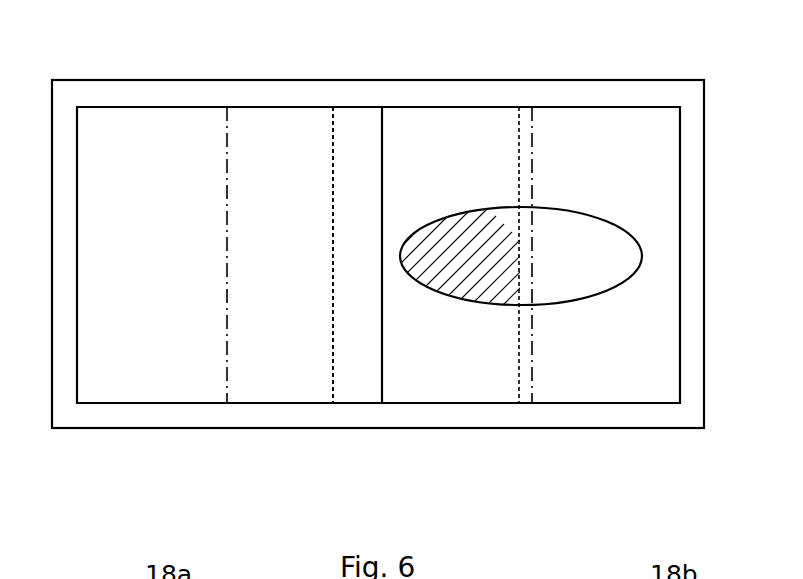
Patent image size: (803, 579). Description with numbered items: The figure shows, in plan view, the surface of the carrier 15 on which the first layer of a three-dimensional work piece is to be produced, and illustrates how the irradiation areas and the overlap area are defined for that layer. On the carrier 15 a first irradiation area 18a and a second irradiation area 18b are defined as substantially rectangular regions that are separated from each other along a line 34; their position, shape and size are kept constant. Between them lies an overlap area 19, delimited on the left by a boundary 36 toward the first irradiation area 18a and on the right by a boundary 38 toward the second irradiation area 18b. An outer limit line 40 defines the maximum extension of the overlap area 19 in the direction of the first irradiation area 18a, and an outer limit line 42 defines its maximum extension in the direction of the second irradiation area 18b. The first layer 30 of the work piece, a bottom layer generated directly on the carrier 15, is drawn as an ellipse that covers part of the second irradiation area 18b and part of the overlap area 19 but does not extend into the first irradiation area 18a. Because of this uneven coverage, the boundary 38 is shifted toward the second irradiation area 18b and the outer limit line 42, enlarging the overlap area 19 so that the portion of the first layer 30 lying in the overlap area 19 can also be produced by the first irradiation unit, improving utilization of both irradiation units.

The carrier 15 is at (102, 434).
The first irradiation area 18a is at (109, 103).
The second irradiation area 18b is at (613, 102).
The overlap area 19 is at (327, 140).
The first layer 30 is at (588, 299).
The line 34 is at (382, 390).
The boundary 36 is at (333, 383).
The boundary 38 is at (518, 380).
The outer limit line 40 is at (227, 388).
The outer limit line 42 is at (533, 376).